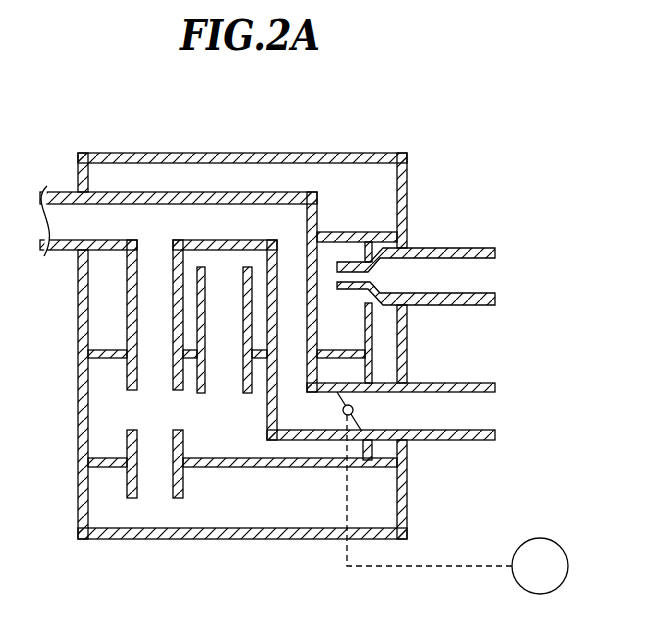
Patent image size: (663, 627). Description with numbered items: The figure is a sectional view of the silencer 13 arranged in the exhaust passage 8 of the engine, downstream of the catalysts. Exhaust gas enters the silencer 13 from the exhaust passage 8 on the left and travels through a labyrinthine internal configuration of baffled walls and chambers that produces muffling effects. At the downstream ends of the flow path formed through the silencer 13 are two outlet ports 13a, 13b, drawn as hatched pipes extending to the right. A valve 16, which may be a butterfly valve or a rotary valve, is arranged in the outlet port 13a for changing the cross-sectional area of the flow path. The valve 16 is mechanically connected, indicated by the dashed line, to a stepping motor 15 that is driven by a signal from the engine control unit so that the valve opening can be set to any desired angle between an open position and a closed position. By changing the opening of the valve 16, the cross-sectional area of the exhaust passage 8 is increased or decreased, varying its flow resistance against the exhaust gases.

The exhaust passage 8 is at (46, 192).
The silencer 13 is at (335, 141).
The outlet port 13a is at (480, 248).
The outlet port 13b is at (478, 383).
The stepping motor 15 is at (562, 545).
The valve 16 is at (353, 411).